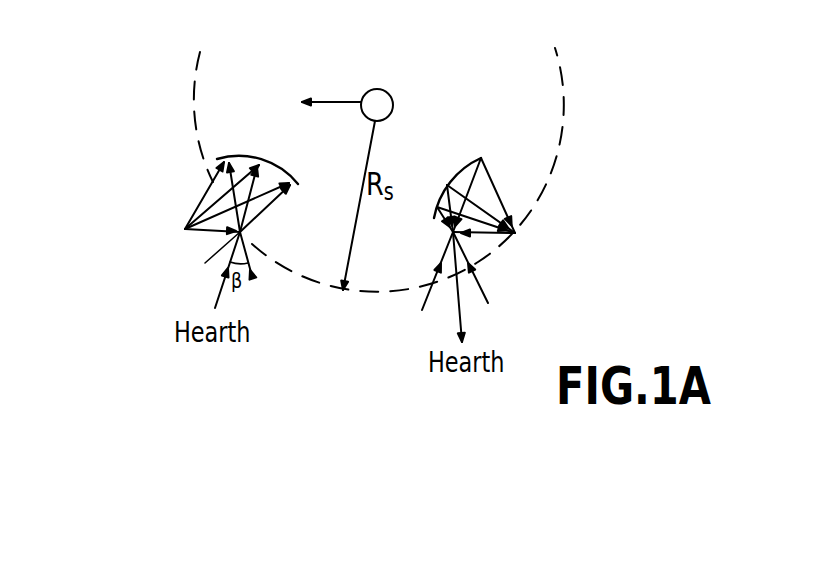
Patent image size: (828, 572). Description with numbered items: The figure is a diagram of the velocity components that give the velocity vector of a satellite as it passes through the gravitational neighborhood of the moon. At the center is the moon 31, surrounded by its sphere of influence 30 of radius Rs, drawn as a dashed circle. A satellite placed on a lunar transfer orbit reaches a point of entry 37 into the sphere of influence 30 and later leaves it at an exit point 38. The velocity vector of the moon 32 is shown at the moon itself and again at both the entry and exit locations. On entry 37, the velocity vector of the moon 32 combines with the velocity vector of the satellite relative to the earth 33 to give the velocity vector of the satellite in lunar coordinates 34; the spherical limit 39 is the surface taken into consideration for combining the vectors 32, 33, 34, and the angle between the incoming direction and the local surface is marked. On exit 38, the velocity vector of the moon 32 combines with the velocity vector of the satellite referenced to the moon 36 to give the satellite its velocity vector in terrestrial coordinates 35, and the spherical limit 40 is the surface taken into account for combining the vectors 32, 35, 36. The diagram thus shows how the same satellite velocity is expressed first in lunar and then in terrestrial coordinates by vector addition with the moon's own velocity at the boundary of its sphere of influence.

The sphere of influence 30 is at (557, 55).
The moon 31 is at (395, 98).
The velocity vector of the moon 32 is at (374, 42).
The velocity vector of the satellite relative to the earth 33 is at (263, 209).
The velocity vector of the satellite in lunar coordinates 34 is at (205, 197).
The velocity vector of the satellite in terrestrial coordinates 35 is at (450, 232).
The velocity vector of the satellite referenced to the moon 36 is at (500, 190).
The point of entry 37 is at (242, 232).
The exit point 38 is at (527, 233).
The spherical limit 39 is at (247, 157).
The spherical limit 40 is at (458, 176).